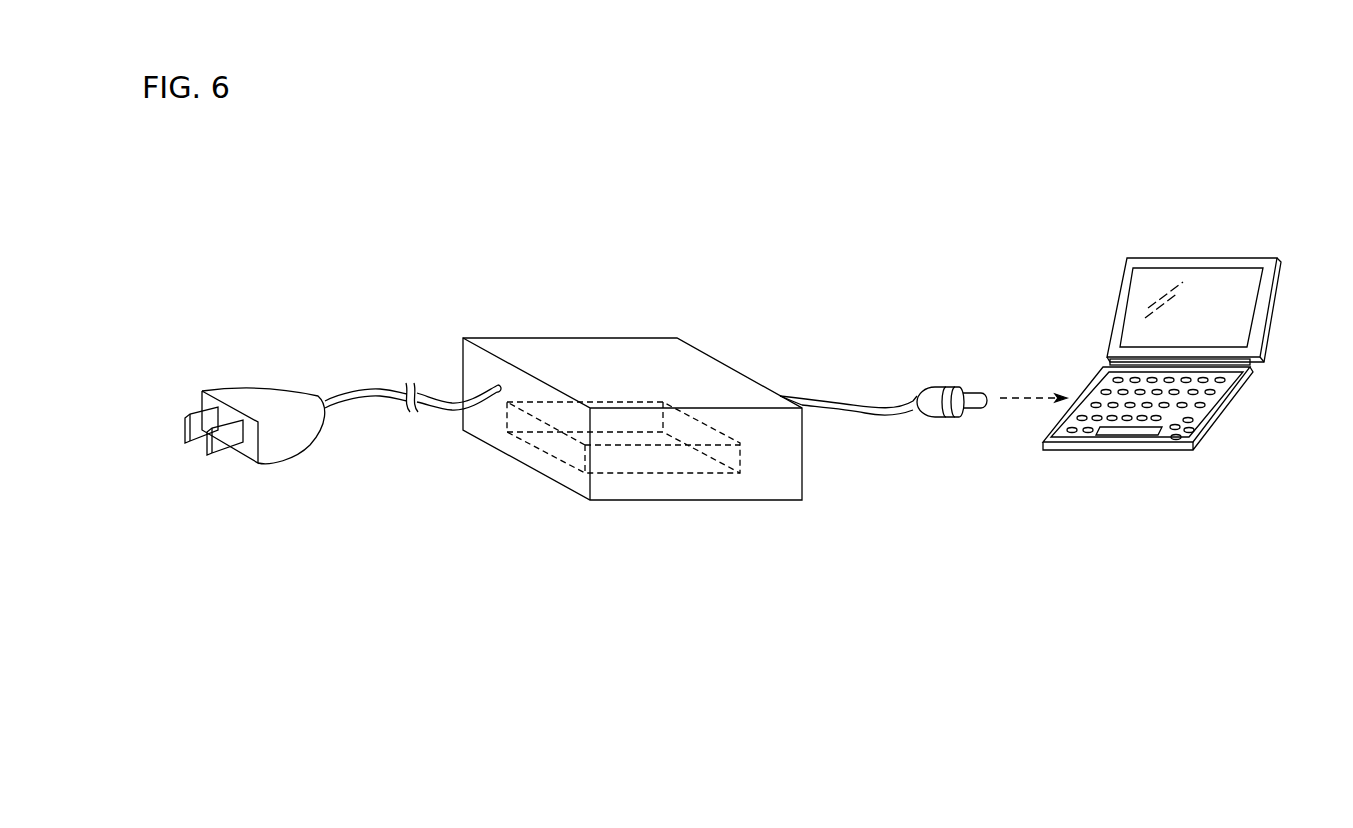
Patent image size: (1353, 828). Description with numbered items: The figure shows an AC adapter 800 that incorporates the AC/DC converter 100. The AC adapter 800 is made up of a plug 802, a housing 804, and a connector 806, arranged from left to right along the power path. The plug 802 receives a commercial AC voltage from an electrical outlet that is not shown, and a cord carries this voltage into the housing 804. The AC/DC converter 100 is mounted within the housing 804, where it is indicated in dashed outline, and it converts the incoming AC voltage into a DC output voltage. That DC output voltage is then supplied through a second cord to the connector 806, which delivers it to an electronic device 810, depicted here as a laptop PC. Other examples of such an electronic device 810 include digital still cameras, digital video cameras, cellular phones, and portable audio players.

The AC adapter 800 is at (746, 680).
The plug 802 is at (263, 400).
The housing 804 is at (562, 338).
The AC/DC converter 100 is at (653, 457).
The connector 806 is at (935, 382).
The electronic device 810 is at (1211, 257).